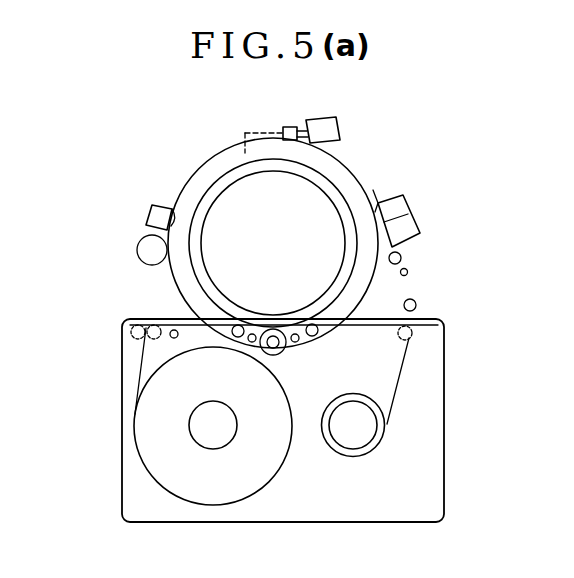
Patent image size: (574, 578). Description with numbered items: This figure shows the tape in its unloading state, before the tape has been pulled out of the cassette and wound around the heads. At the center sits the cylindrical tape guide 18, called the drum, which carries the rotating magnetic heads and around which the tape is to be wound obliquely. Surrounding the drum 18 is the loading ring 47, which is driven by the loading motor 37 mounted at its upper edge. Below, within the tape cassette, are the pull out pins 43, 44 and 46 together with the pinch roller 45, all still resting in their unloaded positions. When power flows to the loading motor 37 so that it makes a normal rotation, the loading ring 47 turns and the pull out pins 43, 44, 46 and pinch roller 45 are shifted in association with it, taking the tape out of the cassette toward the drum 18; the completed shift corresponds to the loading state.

The cylindrical tape guide 18 is at (317, 218).
The loading motor 37 is at (336, 122).
The pull out pin 43 is at (236, 337).
The pull out pin 44 is at (316, 336).
The pinch roller 45 is at (282, 353).
The pull out pin 46 is at (175, 338).
The loading ring 47 is at (201, 196).